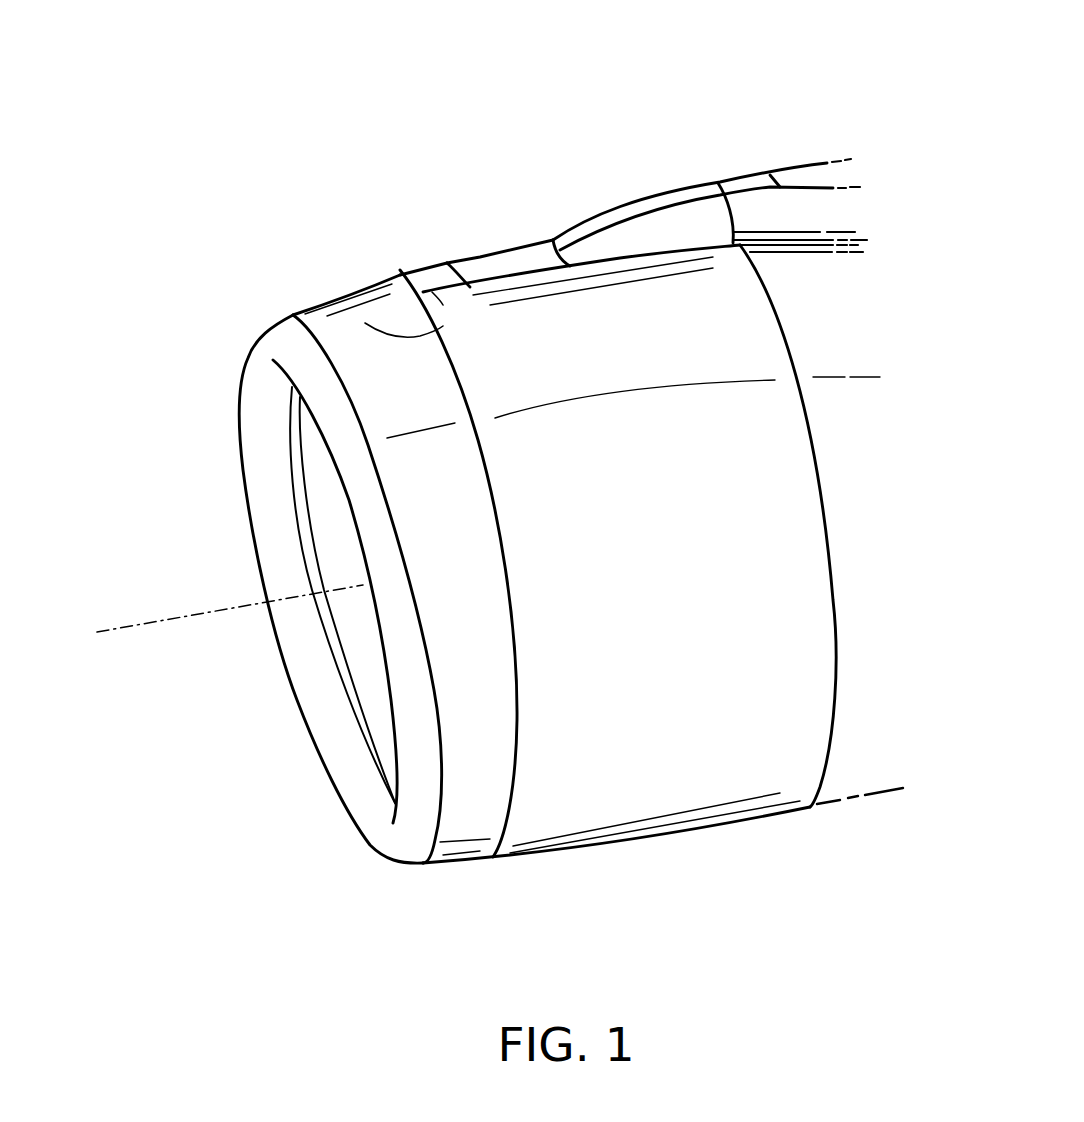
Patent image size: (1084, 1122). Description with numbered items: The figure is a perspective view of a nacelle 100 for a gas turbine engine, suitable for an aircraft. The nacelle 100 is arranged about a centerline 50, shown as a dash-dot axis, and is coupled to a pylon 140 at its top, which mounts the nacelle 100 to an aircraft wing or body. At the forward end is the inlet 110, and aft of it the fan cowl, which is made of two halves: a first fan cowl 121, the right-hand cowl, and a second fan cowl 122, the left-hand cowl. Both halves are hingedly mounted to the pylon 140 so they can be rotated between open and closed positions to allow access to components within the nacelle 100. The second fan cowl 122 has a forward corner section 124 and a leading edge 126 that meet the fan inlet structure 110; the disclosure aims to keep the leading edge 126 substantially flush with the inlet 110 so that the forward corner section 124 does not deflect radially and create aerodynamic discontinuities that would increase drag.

The nacelle 100 is at (340, 87).
The centerline 50 is at (153, 622).
The inlet 110 is at (287, 315).
The first fan cowl 121 is at (427, 267).
The second fan cowl 122 is at (568, 337).
The forward corner section 124 is at (432, 292).
The leading edge 126 is at (365, 323).
The pylon 140 is at (670, 191).